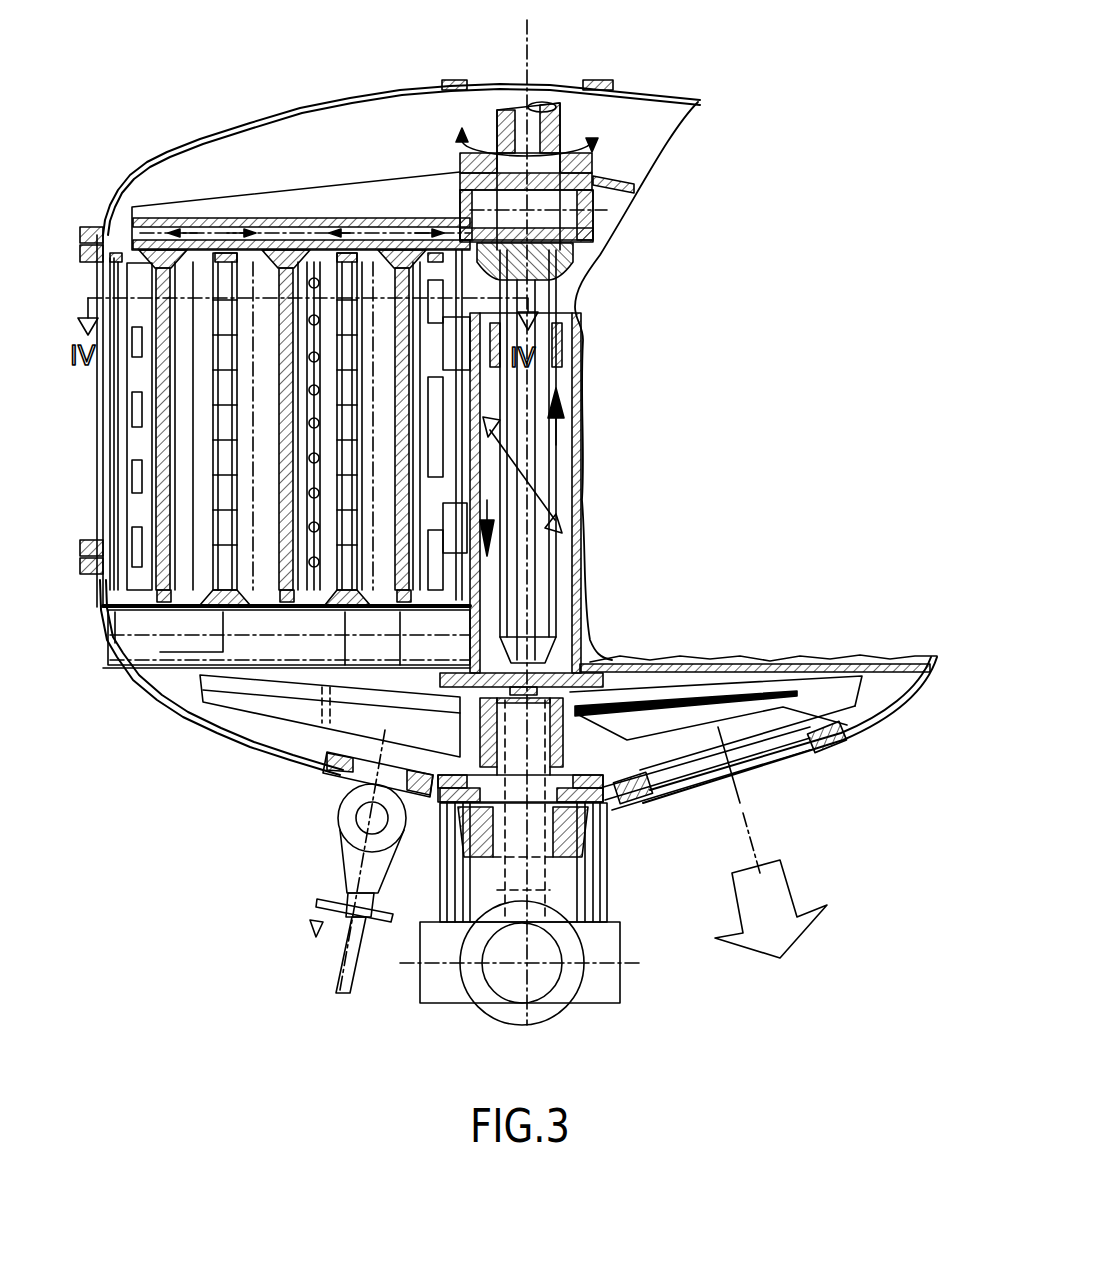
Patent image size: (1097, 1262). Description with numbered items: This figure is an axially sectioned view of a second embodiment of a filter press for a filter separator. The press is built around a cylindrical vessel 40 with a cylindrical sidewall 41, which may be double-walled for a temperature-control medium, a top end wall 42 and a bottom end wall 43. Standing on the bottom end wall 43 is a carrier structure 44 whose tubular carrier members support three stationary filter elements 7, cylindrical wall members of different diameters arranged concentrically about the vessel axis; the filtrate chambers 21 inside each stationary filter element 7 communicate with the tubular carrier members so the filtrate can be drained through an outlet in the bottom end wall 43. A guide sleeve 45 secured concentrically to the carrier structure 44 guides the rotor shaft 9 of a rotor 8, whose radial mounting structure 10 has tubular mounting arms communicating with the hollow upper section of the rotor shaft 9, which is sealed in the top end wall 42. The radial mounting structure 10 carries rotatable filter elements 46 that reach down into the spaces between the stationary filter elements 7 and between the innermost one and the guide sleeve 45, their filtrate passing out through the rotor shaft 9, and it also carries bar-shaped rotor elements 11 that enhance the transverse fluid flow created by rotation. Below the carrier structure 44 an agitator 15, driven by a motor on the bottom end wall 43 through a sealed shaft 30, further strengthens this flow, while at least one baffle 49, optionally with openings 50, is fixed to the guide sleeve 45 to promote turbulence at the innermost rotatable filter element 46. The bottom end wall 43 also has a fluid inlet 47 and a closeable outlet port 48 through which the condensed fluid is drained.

The stationary filter elements 7 is at (115, 255).
The rotor 8 is at (634, 162).
The rotor shaft 9 is at (540, 122).
The radial mounting structure 10 is at (532, 40).
The bar-shaped rotor elements 11 is at (382, 270).
The agitator 15 is at (838, 747).
The filtrate chambers 21 is at (240, 512).
The shaft 30 is at (590, 682).
The cylindrical vessel 40 is at (178, 133).
The cylindrical sidewall 41 is at (98, 467).
The top end wall 42 is at (249, 122).
The bottom end wall 43 is at (253, 745).
The carrier structure 44 is at (170, 667).
The guide sleeve 45 is at (577, 712).
The rotatable filter elements 46 is at (273, 600).
The fluid inlet 47 is at (348, 857).
The closeable outlet port 48 is at (763, 757).
The baffle 49 is at (410, 228).
The openings 50 is at (450, 290).